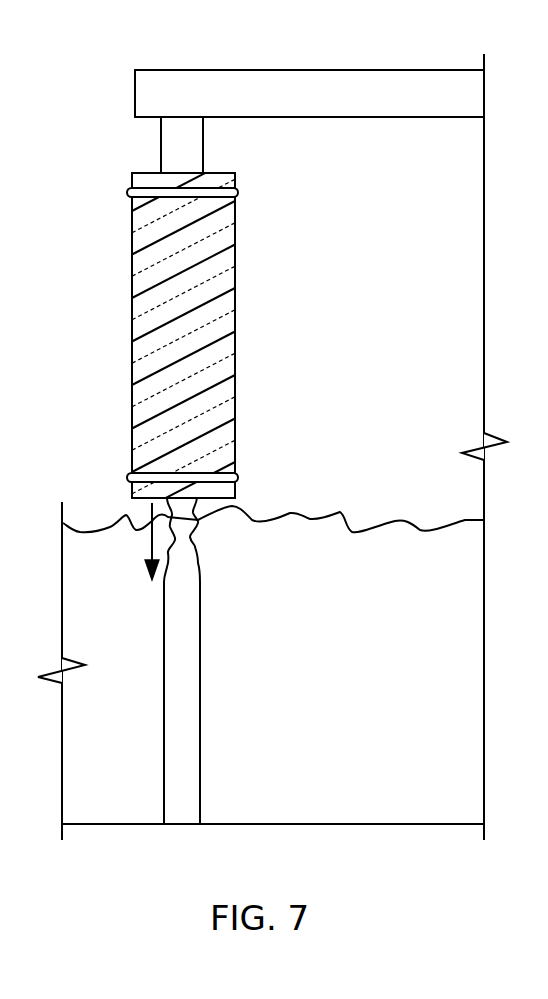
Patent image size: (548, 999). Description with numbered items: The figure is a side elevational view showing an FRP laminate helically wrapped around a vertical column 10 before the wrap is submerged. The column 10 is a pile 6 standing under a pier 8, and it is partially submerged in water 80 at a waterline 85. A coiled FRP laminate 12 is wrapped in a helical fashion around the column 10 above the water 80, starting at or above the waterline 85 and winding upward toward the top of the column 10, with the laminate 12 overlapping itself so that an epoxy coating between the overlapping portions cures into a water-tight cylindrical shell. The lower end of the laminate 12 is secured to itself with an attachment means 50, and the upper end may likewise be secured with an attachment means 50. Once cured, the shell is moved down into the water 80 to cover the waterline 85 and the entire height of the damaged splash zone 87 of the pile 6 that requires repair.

The pier 8 is at (182, 92).
The pile 6 is at (173, 139).
The vertical column 10 is at (195, 154).
The coiled FRP laminate 12 is at (220, 366).
The attachment means 50 is at (215, 192).
The water 80 is at (450, 550).
The waterline 85 is at (218, 542).
The damaged splash zone 87 is at (177, 545).